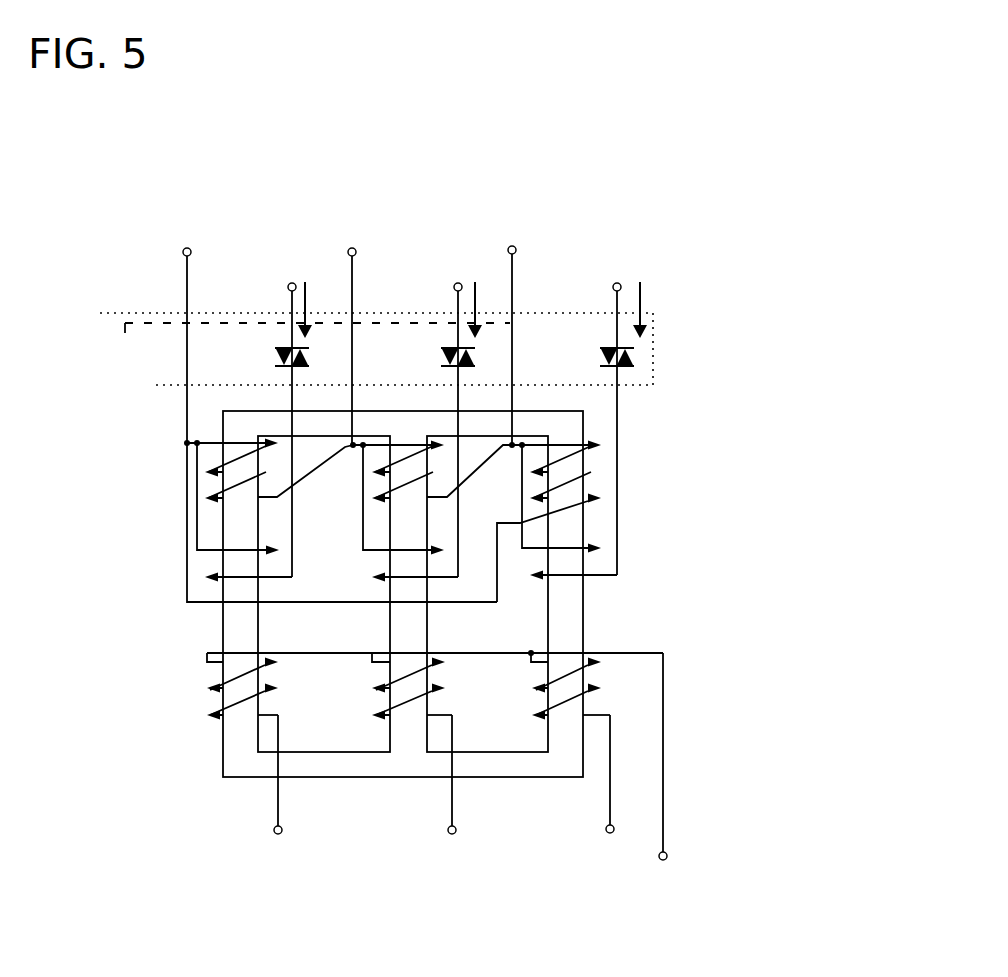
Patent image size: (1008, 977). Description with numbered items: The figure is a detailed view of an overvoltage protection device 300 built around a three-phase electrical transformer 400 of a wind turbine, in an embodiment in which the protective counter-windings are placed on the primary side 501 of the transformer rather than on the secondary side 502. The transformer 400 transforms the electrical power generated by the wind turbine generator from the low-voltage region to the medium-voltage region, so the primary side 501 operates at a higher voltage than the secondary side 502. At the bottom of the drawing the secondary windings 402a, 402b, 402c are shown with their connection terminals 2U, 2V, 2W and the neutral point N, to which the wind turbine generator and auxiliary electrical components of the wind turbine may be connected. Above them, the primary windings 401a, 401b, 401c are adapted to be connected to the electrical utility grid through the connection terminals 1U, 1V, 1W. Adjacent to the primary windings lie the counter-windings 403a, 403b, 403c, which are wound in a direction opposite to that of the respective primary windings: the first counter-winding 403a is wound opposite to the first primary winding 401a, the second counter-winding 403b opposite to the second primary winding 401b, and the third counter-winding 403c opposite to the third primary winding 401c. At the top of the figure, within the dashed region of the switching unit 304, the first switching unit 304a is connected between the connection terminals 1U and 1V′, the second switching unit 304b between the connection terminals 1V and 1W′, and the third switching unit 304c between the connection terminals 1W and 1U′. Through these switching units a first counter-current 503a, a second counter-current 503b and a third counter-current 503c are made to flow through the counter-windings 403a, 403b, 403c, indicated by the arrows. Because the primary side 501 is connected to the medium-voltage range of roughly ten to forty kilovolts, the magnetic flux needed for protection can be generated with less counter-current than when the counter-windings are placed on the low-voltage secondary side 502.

The overvoltage protection device 300 is at (806, 187).
The switching unit 304 is at (690, 347).
The first switching unit 304a is at (283, 348).
The second switching unit 304b is at (446, 348).
The third switching unit 304c is at (605, 348).
The first counter-current 503a is at (309, 310).
The second counter-current 503b is at (478, 310).
The third counter-current 503c is at (644, 306).
The three-phase transformer 400 is at (415, 770).
The first primary winding 401a is at (207, 472).
The second primary winding 401b is at (373, 497).
The third primary winding 401c is at (525, 468).
The secondary winding 402a is at (201, 705).
The secondary winding 402b is at (380, 713).
The secondary winding 402c is at (533, 720).
The first counter-winding 403a is at (215, 572).
The second counter-winding 403b is at (433, 574).
The third counter-winding 403c is at (592, 578).
The primary side 501 is at (715, 462).
The secondary side 502 is at (718, 691).
The connection terminal 1U is at (184, 251).
The connection terminal 1V is at (350, 251).
The connection terminal 1W is at (510, 249).
The connection terminal 1U′ is at (614, 287).
The connection terminal 1V′ is at (289, 287).
The connection terminal 1W′ is at (455, 287).
The connection terminal 2U is at (277, 834).
The connection terminal 2V is at (451, 834).
The connection terminal 2W is at (611, 833).
The neutral point N is at (665, 861).